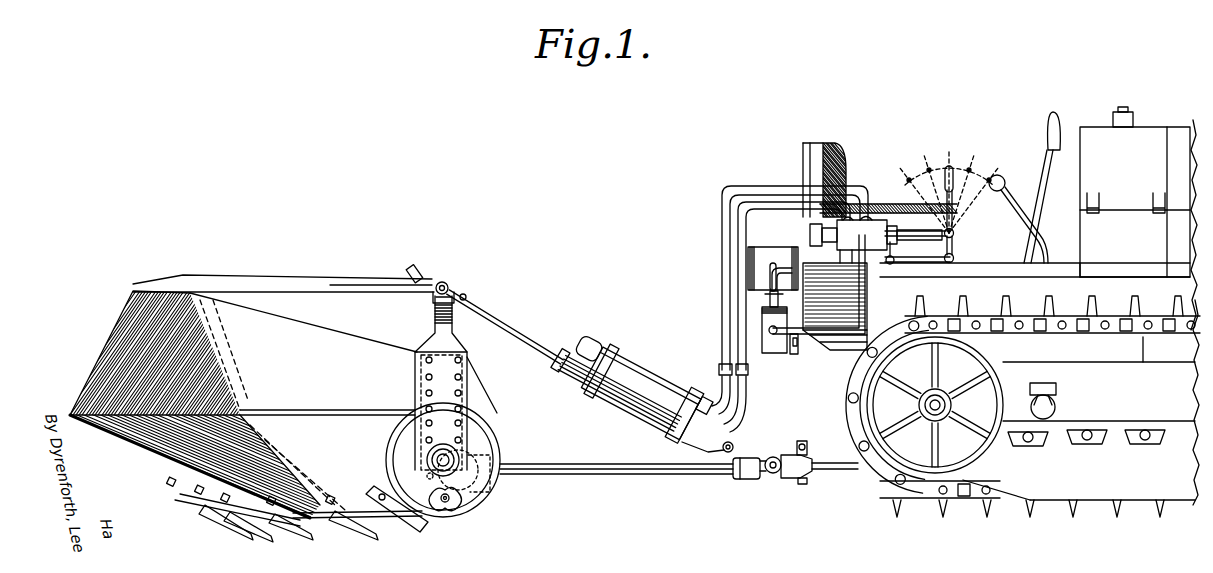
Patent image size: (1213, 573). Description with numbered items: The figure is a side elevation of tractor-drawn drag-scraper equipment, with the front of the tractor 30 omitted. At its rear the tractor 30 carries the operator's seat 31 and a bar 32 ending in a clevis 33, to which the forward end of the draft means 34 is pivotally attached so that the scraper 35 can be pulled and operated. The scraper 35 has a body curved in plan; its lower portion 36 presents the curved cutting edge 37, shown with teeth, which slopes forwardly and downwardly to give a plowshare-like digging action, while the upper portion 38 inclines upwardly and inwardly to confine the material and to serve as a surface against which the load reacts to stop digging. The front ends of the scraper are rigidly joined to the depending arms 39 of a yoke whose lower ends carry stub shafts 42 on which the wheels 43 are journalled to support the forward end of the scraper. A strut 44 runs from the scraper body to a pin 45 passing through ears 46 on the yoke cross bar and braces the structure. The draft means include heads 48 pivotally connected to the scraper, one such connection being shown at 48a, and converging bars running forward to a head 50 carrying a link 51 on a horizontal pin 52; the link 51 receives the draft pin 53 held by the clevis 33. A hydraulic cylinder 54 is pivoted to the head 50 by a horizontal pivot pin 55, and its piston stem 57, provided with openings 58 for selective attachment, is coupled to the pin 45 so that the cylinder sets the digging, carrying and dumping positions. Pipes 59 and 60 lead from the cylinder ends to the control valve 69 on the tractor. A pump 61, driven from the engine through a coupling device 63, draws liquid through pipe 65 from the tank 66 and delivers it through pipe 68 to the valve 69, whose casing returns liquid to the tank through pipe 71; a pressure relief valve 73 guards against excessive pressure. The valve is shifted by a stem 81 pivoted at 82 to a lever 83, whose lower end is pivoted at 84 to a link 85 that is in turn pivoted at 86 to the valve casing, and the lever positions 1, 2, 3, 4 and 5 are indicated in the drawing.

The tractor 30 is at (1180, 135).
The seat 31 is at (828, 144).
The bar 32 is at (863, 475).
The clevis 33 is at (805, 485).
The draft means 34 is at (640, 440).
The scraper 35 is at (364, 494).
The lower portion of scraper body 36 is at (152, 466).
The cutting edge 37 is at (316, 522).
The upper portion of scraper 38 is at (124, 326).
The depending arms of yoke 39 is at (456, 356).
The stub shafts 42 is at (456, 456).
The wheels 43 is at (470, 430).
The strut 44 is at (330, 290).
The pin 45 is at (448, 284).
The ears 46 is at (434, 300).
The heads 48 is at (480, 492).
The pivotal connection of head 48a is at (447, 510).
The head 50 is at (776, 457).
The link 51 is at (788, 480).
The horizontal pin 52 is at (752, 480).
The draft pin 53 is at (802, 440).
The cylinder 54 is at (606, 392).
The horizontal pivot pin 55 is at (732, 443).
The stem 57 is at (528, 338).
The openings 58 is at (422, 275).
The pipe 59 is at (778, 210).
The pipe 60 is at (862, 180).
The pump 61 is at (762, 336).
The coupling device 63 is at (795, 355).
The pipe 65 is at (768, 304).
The tank 66 is at (748, 262).
The pipe 68 is at (858, 298).
The control valve 69 is at (875, 222).
The pipe 71 is at (790, 240).
The pressure relief valve 73 is at (812, 275).
The stem 81 is at (954, 258).
The pivotal connection 82 is at (955, 234).
The lever 83 is at (953, 208).
The pivot 84 is at (953, 262).
The link 85 is at (935, 264).
The pivot 86 is at (891, 265).
The lever position 1 is at (922, 190).
The lever position 2 is at (936, 187).
The lever position 3 is at (948, 185).
The lever position 4 is at (961, 187).
The lever position 5 is at (973, 191).